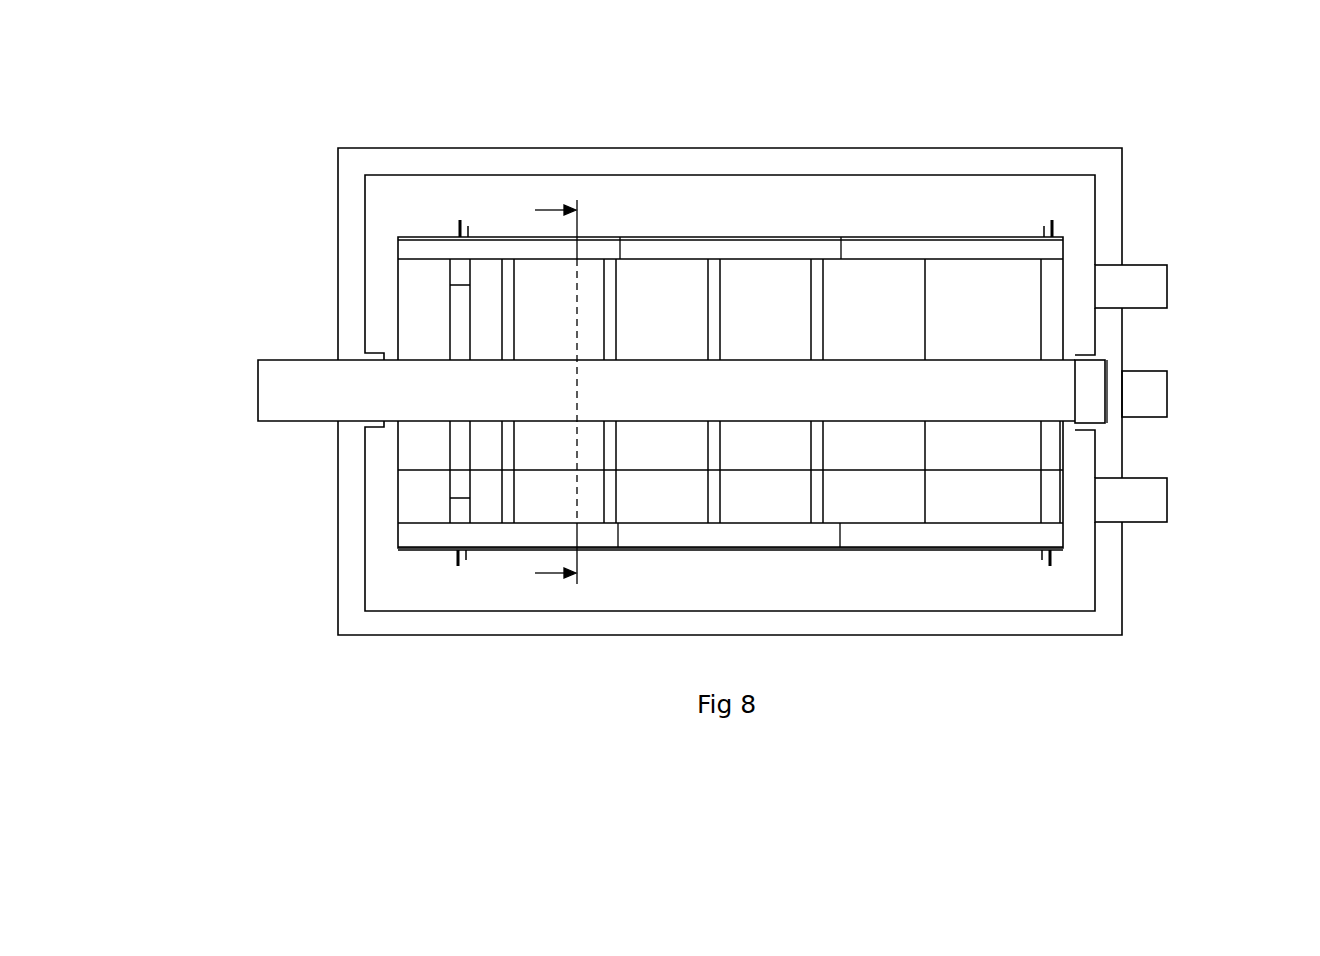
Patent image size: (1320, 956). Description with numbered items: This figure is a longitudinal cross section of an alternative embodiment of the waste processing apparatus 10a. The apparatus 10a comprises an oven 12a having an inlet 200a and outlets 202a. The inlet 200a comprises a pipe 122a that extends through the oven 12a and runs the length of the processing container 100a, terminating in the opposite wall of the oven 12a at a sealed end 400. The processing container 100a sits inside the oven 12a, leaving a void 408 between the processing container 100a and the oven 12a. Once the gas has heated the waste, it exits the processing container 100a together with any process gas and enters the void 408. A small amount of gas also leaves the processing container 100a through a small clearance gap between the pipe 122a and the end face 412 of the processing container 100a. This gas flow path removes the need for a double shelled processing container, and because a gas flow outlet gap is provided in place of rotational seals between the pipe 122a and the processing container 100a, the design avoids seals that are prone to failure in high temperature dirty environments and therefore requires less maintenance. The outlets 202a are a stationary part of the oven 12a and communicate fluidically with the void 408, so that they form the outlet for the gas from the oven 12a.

The apparatus 10a is at (1178, 99).
The oven 12a is at (1118, 209).
The processing container 100a is at (965, 222).
The pipe 122a is at (298, 375).
The inlet 200a is at (244, 388).
The outlets 202a is at (1155, 288).
The sealed end 400 is at (1112, 367).
The void 408 is at (1065, 583).
The end face 412 is at (1065, 458).